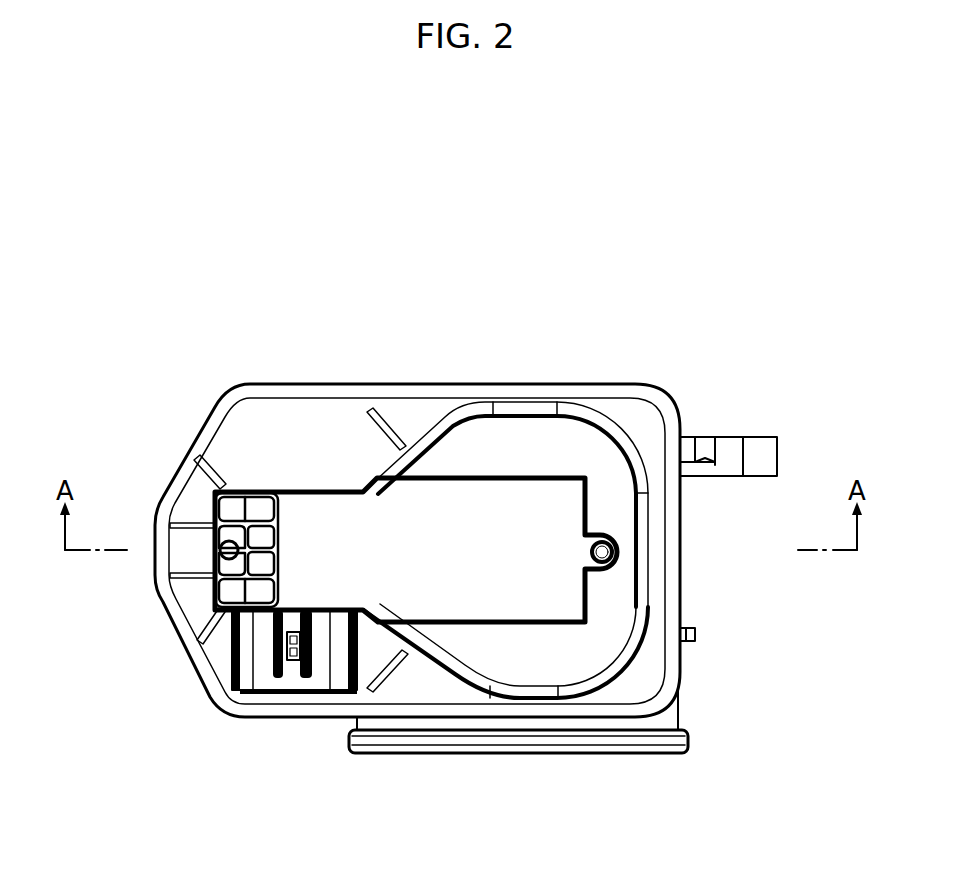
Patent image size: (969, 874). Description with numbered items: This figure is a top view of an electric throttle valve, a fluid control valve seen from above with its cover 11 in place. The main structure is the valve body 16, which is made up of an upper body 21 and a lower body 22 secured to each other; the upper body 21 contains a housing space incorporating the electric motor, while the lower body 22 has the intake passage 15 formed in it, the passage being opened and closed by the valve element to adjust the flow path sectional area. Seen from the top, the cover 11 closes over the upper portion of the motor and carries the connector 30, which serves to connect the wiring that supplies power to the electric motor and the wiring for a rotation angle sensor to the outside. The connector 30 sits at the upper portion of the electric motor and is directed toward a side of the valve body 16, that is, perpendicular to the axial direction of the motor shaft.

The cover 11 is at (287, 445).
The intake passage 15 is at (589, 754).
The valve body 16 is at (452, 381).
The upper body 21 is at (680, 393).
The lower body 22 is at (682, 707).
The connector 30 is at (233, 660).